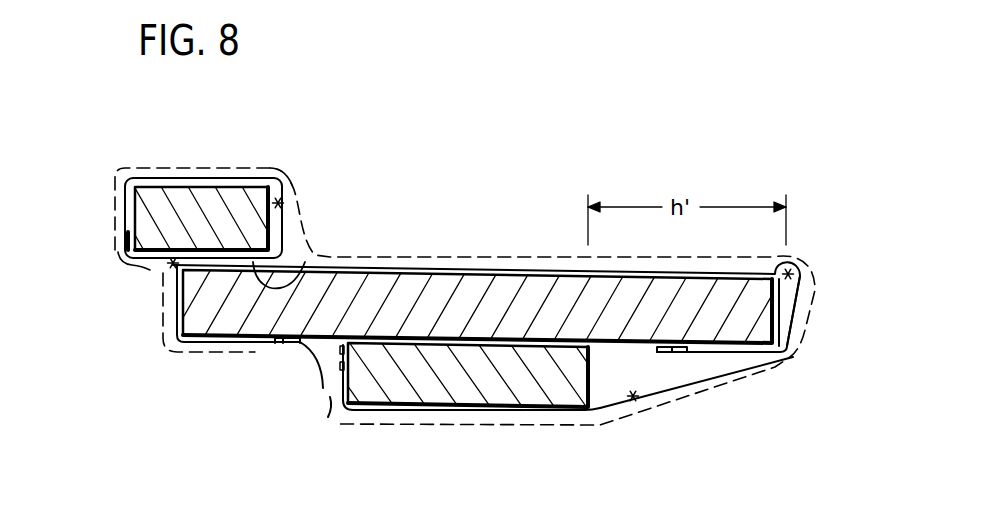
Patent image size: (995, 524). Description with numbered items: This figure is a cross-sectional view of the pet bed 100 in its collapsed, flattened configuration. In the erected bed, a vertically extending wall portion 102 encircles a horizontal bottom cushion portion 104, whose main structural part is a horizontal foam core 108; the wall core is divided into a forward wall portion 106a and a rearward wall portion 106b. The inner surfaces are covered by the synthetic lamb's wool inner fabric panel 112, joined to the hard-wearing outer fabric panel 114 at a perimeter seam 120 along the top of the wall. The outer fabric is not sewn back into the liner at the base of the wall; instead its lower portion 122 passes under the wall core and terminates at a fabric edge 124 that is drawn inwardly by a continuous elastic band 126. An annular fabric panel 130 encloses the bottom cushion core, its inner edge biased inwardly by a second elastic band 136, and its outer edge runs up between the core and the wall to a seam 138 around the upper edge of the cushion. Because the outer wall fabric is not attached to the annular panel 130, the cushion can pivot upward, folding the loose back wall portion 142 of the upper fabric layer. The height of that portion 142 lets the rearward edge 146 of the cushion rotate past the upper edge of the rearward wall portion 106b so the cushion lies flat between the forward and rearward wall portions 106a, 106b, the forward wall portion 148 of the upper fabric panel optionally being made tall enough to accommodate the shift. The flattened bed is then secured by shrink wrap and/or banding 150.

The pet bed 100 is at (230, 148).
The wall portion 102 is at (216, 168).
The bottom cushion portion 104 is at (456, 263).
The forward wall portion 106a is at (205, 200).
The rearward wall portion 106b is at (452, 395).
The horizontal foam core 108 is at (488, 282).
The inner/upper fabric panel 112 is at (473, 275).
The outer fabric panel 114 is at (510, 413).
The perimeter seam 120 is at (297, 200).
The lower portion of the outer fabric 122 is at (127, 205).
The fabric edge 124 is at (120, 252).
The continuous elastic band 126 is at (128, 262).
The annular fabric panel 130 is at (215, 347).
The second elastic band 136 is at (300, 350).
The seam 138 is at (170, 266).
The back wall portion of the upper fabric layer 142 is at (733, 377).
The rearward edge of the bottom cushion 146 is at (776, 316).
The forward wall portion of the upper fabric panel 148 is at (305, 262).
The shrink wrap and/or banding 150 is at (282, 165).